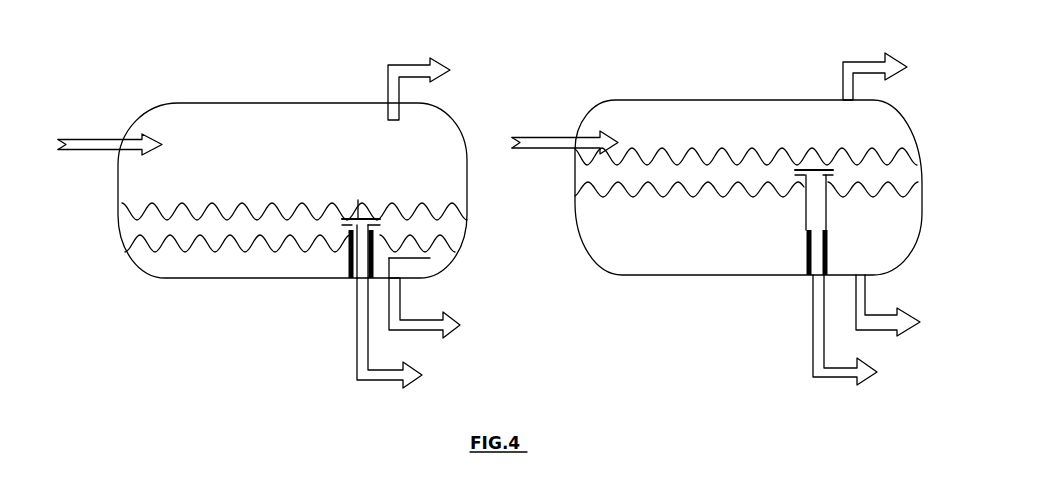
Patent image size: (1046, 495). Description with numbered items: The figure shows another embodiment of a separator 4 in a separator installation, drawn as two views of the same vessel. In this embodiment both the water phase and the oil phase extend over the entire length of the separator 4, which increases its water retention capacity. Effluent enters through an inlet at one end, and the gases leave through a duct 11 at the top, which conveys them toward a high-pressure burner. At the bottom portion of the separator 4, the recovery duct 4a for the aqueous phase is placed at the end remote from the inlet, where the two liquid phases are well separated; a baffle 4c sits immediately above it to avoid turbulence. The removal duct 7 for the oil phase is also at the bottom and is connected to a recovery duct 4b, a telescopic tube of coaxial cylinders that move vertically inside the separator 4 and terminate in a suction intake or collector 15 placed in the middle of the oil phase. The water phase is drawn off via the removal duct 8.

The separator 4 is at (175, 102).
The duct 11 is at (403, 70).
The suction intake or collector 15 is at (352, 218).
The recovery duct 4a is at (415, 275).
The recovery duct 4b is at (833, 220).
The baffle 4c is at (413, 257).
The removal duct 7 is at (357, 325).
The removal duct 8 is at (430, 327).